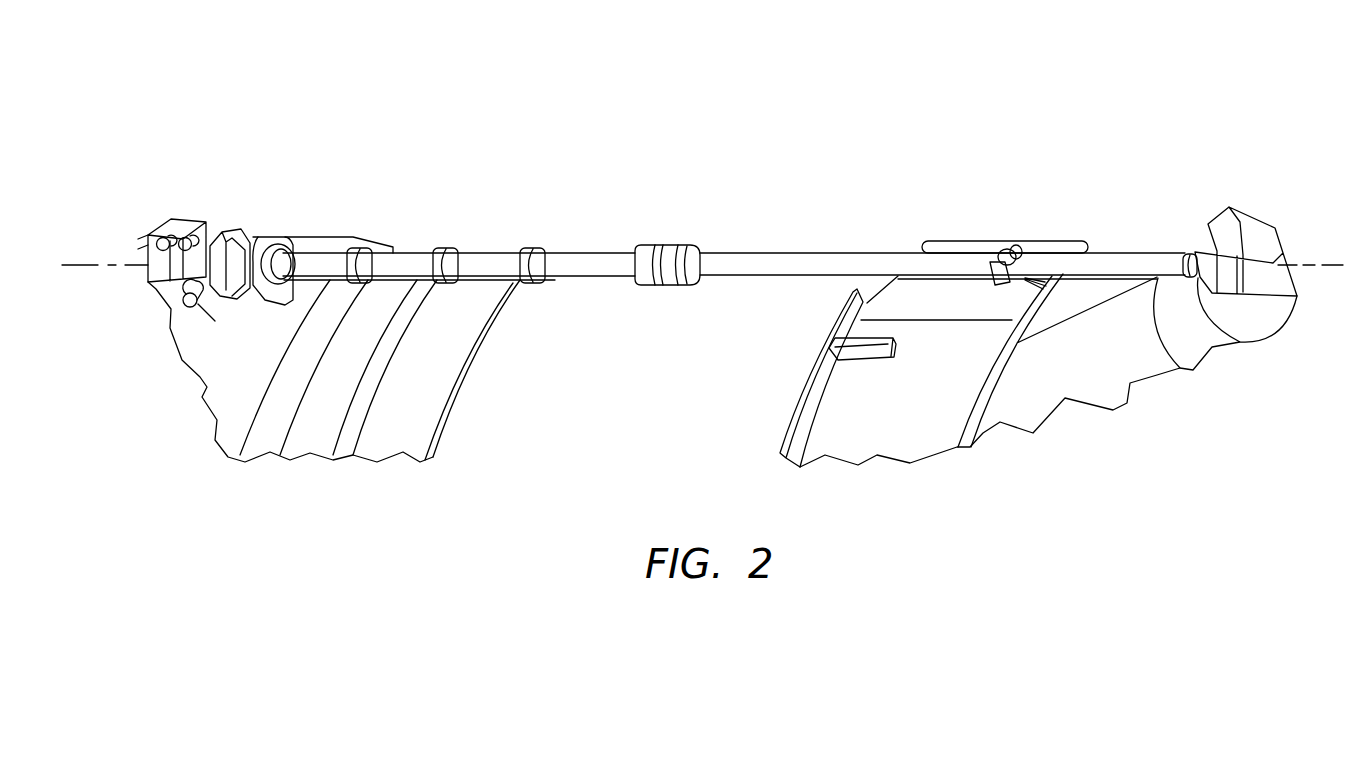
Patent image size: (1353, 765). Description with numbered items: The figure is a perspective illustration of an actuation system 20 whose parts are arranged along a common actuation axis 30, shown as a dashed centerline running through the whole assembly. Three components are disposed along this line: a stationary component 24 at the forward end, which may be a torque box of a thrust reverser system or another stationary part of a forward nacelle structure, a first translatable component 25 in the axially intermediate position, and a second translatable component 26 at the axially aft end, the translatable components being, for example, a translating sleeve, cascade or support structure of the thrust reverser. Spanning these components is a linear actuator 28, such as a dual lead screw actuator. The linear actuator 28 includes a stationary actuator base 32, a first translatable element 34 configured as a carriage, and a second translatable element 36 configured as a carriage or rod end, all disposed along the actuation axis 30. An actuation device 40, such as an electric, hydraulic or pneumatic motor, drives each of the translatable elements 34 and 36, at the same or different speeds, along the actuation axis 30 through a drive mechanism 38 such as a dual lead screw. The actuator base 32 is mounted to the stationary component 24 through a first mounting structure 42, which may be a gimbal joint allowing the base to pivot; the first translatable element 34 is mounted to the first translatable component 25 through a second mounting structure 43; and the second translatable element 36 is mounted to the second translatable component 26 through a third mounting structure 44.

The actuation system 20 is at (1070, 88).
The stationary component 24 is at (218, 392).
The first translatable component 25 is at (823, 384).
The second translatable component 26 is at (1200, 340).
The linear actuator 28 is at (704, 218).
The actuation axis 30 is at (87, 263).
The stationary actuator base 32 is at (251, 243).
The first translatable element 34 is at (975, 262).
The second translatable element 36 is at (1163, 264).
The drive mechanism 38 is at (614, 233).
The actuation device 40 is at (195, 200).
The first mounting structure 42 is at (246, 222).
The second mounting structure 43 is at (1022, 235).
The third mounting structure 44 is at (1212, 248).